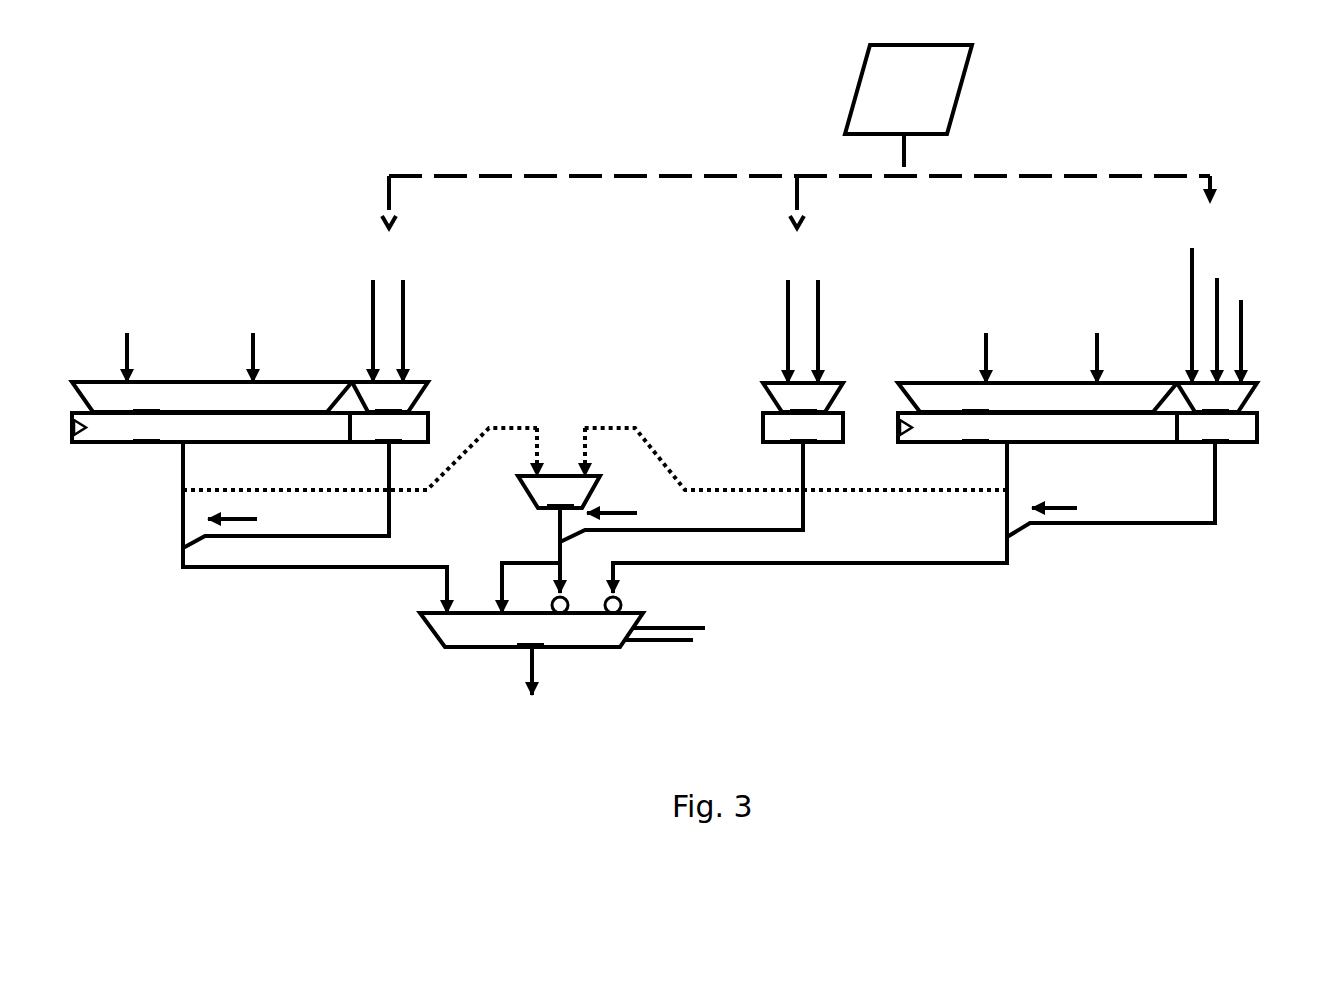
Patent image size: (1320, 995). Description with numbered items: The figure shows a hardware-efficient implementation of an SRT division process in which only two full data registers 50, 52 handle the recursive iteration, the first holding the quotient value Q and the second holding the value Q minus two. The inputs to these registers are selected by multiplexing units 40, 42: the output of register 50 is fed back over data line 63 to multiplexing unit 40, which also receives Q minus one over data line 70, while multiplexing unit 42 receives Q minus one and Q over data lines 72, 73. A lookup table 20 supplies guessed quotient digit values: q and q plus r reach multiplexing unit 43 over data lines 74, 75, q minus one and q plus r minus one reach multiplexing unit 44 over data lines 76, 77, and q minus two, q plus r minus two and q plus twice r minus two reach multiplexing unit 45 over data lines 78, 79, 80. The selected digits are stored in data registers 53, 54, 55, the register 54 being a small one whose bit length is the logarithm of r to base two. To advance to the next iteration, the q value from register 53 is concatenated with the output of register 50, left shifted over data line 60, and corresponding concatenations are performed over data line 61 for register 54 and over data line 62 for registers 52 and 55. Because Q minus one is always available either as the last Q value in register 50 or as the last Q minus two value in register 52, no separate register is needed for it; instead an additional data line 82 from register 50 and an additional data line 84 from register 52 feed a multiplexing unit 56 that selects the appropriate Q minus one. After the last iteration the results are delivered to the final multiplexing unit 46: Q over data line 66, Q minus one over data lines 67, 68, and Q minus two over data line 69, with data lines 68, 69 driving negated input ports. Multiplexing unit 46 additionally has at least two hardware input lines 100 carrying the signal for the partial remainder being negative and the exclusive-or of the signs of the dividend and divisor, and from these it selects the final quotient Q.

The lookup table 20 is at (960, 95).
The multiplexing unit 40 is at (212, 397).
The multiplexing unit 42 is at (1037, 397).
The multiplexing unit 43 is at (390, 397).
The multiplexing unit 44 is at (803, 397).
The multiplexing unit 45 is at (1217, 397).
The multiplexing unit 46 is at (531, 673).
The data register 50 is at (250, 429).
The data register 52 is at (1077, 429).
The data register 53 is at (389, 427).
The data register 54 is at (803, 427).
The data register 55 is at (1217, 427).
The multiplexing unit 56 is at (611, 502).
The data line 60 is at (282, 537).
The data line 61 is at (773, 530).
The data line 62 is at (1145, 525).
The data line 63 is at (127, 360).
The data line 66 is at (215, 568).
The data line 67 is at (520, 558).
The data line 68 is at (560, 575).
The data line 69 is at (918, 564).
The data line 70 is at (253, 360).
The data line 72 is at (986, 360).
The data line 73 is at (1097, 360).
The data line 74 is at (373, 338).
The data line 75 is at (403, 338).
The data line 76 is at (788, 330).
The data line 77 is at (818, 330).
The data line 78 is at (1192, 300).
The data line 79 is at (1217, 335).
The data line 80 is at (1242, 328).
The data line 82 is at (425, 494).
The data line 84 is at (655, 453).
The hardware input lines 100 is at (660, 640).